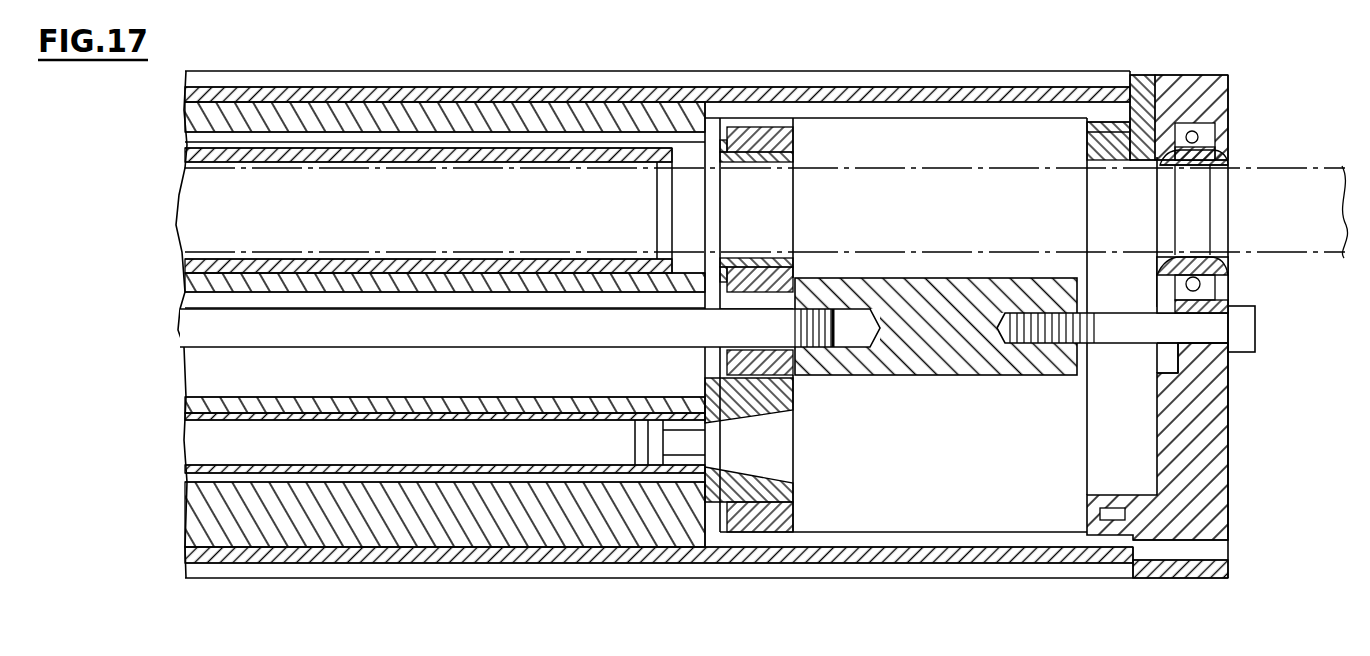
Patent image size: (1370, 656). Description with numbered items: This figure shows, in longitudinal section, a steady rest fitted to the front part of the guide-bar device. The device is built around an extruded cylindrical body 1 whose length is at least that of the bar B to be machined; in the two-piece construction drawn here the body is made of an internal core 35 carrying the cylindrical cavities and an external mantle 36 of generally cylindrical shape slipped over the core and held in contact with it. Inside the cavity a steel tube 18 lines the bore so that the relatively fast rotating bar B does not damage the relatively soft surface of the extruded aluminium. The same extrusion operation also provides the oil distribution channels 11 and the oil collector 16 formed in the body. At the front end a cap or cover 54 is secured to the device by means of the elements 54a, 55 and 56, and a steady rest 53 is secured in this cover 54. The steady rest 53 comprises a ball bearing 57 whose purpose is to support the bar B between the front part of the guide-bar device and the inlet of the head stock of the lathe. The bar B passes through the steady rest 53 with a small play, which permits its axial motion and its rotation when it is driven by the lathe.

The cylindrical body 1 is at (489, 50).
The oil distribution channels 11 is at (364, 138).
The oil collector 16 is at (950, 488).
The tubes 18 is at (185, 160).
The core 35 is at (581, 100).
The mantle 36 is at (866, 92).
The steady rest 53 is at (1228, 160).
The cap or cover 54 is at (1205, 424).
The fastening element 54a is at (1134, 328).
The fastening element 55 is at (966, 352).
The fastening element 56 is at (816, 345).
The ball bearing 57 is at (1192, 128).
The bar B is at (1303, 255).